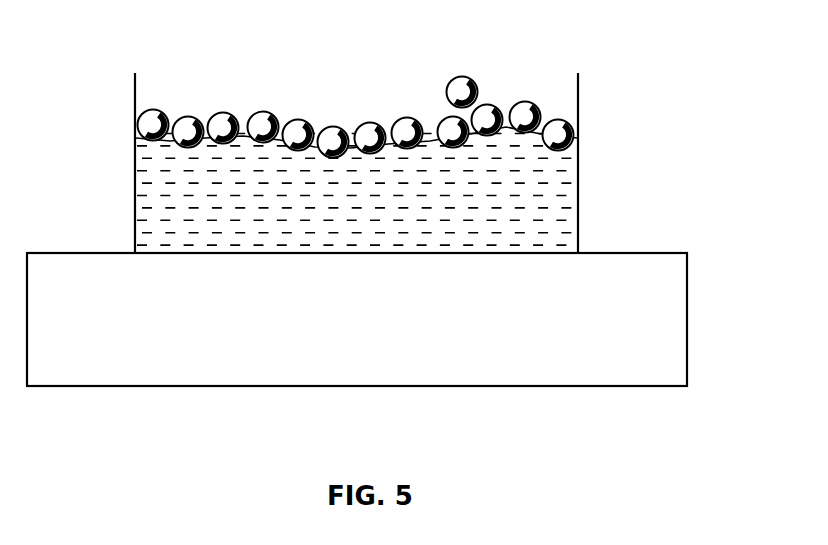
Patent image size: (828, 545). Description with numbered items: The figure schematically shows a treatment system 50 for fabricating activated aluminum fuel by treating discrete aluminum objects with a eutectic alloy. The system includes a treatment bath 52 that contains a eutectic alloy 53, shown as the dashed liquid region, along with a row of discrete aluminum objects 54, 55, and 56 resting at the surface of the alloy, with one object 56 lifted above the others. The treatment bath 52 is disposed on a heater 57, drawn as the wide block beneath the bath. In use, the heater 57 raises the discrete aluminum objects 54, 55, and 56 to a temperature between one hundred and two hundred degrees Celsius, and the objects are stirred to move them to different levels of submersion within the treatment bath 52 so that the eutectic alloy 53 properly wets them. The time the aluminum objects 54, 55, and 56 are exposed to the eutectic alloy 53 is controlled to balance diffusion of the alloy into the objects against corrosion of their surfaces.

The treatment system 50 is at (512, 60).
The treatment bath 52 is at (578, 100).
The eutectic alloy 53 is at (270, 236).
The discrete aluminum object 54 is at (370, 122).
The discrete aluminum object 55 is at (260, 112).
The discrete aluminum object 56 is at (464, 76).
The heater 57 is at (463, 368).